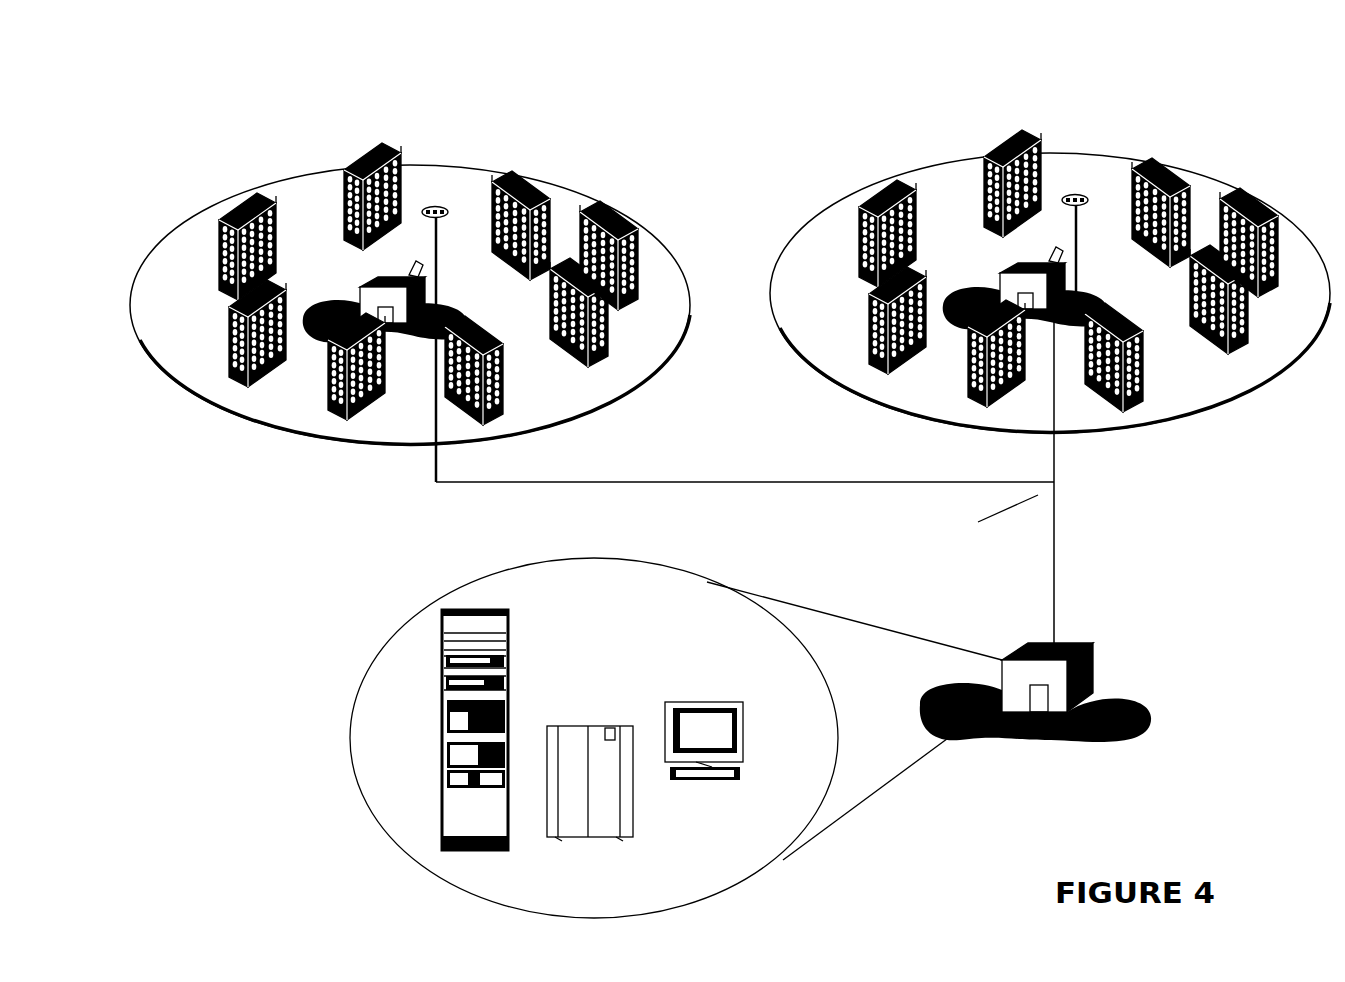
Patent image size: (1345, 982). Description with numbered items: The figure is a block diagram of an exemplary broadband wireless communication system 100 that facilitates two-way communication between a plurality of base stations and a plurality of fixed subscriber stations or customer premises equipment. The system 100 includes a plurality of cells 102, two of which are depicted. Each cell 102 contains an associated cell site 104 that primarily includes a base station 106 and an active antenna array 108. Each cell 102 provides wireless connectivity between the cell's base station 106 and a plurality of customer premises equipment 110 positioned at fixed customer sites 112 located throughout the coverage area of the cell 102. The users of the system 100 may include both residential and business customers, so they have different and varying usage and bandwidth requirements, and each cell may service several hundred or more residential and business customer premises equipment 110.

The broadband wireless communication system 100 is at (262, 655).
The cell 102 is at (192, 340).
The cell site 104 is at (307, 336).
The base station 106 is at (377, 277).
The active antenna array 108 is at (445, 207).
The customer premises equipment 110 is at (243, 207).
The fixed customer site 112 is at (376, 165).